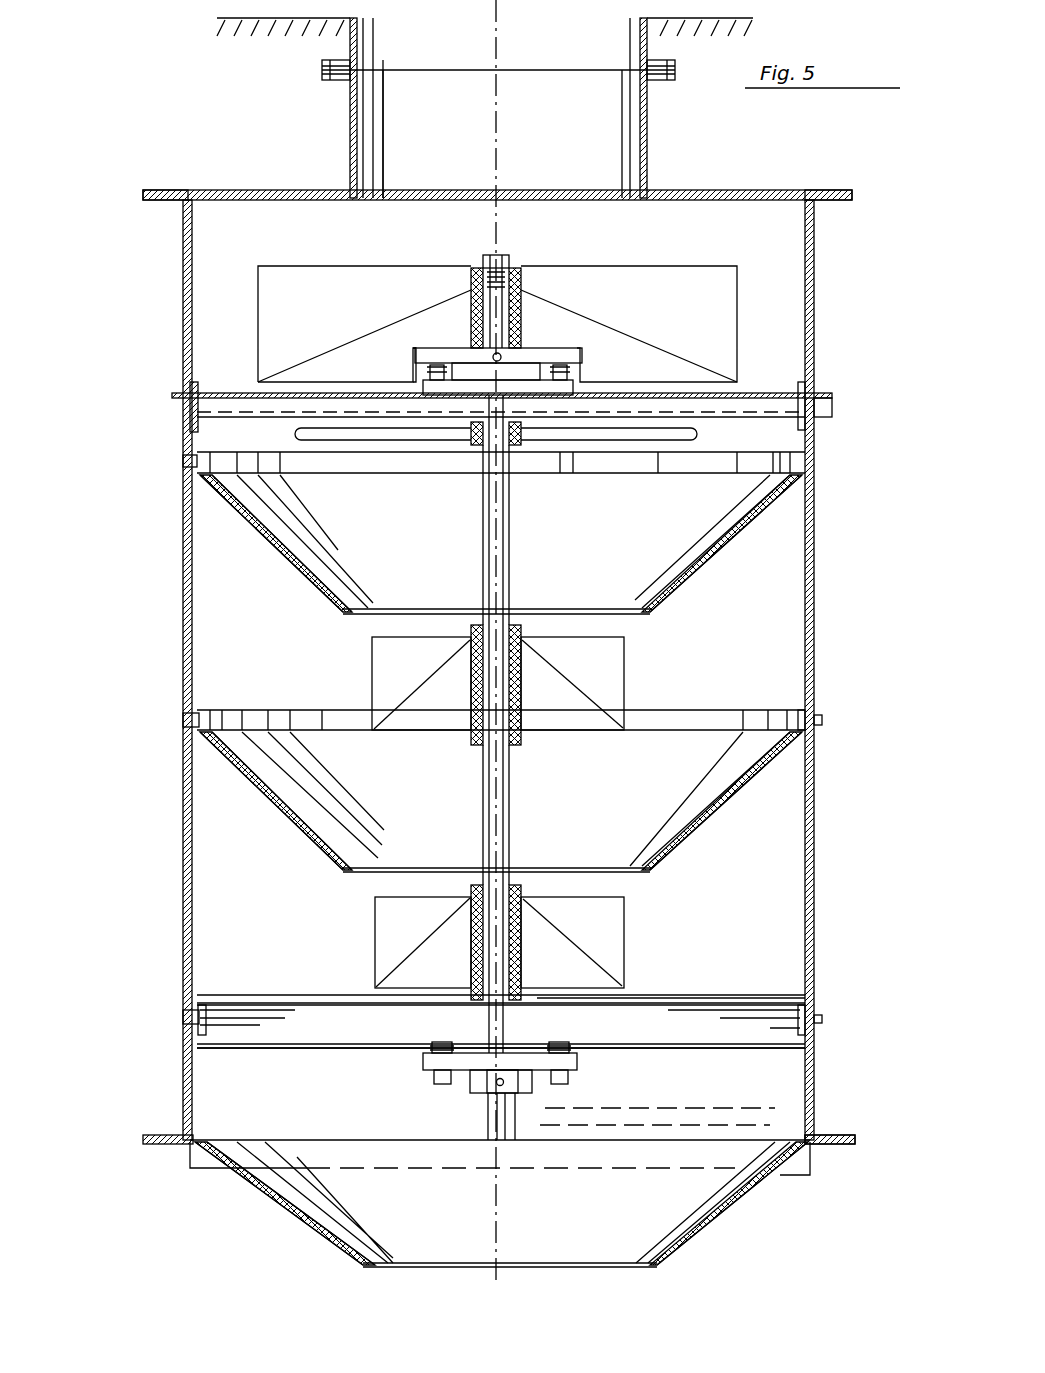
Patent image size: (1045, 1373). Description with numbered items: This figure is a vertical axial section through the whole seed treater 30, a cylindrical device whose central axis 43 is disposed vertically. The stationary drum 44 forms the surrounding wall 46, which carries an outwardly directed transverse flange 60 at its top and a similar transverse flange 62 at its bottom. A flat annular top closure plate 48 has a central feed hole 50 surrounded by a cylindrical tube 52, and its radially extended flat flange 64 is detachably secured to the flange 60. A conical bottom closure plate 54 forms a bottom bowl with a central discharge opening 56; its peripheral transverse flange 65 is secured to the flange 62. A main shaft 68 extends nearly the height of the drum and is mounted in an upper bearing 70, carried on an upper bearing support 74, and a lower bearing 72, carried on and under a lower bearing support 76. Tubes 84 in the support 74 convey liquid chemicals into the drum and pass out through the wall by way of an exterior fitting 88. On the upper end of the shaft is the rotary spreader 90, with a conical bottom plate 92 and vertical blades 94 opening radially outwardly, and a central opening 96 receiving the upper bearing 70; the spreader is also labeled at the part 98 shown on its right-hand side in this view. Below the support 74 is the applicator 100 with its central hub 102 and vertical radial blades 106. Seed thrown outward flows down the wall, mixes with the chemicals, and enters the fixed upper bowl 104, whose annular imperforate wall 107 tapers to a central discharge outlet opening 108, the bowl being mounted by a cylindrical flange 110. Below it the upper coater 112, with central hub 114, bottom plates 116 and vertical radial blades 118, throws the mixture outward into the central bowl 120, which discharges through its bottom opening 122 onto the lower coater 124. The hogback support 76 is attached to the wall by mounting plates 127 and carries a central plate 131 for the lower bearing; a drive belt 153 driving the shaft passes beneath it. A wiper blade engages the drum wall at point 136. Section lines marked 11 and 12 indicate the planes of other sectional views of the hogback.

The seed treater 30 is at (206, 112).
The central axis 43 is at (496, 125).
The stationary drum 44 is at (816, 368).
The surrounding wall 46 is at (183, 328).
The top closure plate 48 is at (704, 192).
The feed hole 50 is at (395, 185).
The cylindrical tube 52 is at (350, 146).
The conical bottom closure plate 54 is at (718, 1225).
The central discharge opening 56 is at (358, 1270).
The transverse flange 60 is at (840, 208).
The transverse flange 62 is at (160, 1135).
The peripheral flat flange 64 is at (163, 190).
The peripheral transverse flange 65 is at (855, 1148).
The main shaft 68 is at (503, 285).
The upper bearing 70 is at (585, 360).
The lower bearing 72 is at (425, 1058).
The upper bearing support 74 is at (746, 393).
The lower bearing support 76 is at (690, 1035).
The tubes 84 is at (378, 450).
The exterior fitting 88 is at (832, 415).
The rotary spreader 90 is at (487, 304).
The bottom plate 92 is at (352, 338).
The vertical blades 94 is at (378, 278).
The central opening 96 is at (415, 368).
The right distributor box 98 is at (522, 335).
The applicator 100 is at (708, 435).
The central hub 102 is at (472, 442).
The upper bowl 104 is at (268, 548).
The vertical radial blades 106 is at (658, 450).
The annular imperforate wall 107 is at (688, 580).
The central discharge outlet opening 108 is at (652, 616).
The cylindrical flange 110 is at (190, 492).
The upper coater 112 is at (628, 681).
The central hub 114 is at (480, 748).
The bottom plates 116 is at (585, 730).
The vertical radial blades 118 is at (372, 668).
The central bowl 120 is at (280, 820).
The bottom opening 122 is at (652, 878).
The lower coater 124 is at (628, 921).
The mounting plates 127 is at (196, 1052).
The central plate 131 is at (530, 1052).
The point 136 is at (200, 437).
The drive belt 153 is at (700, 1108).
The section line 11 is at (312, 985).
The section line 12 is at (360, 905).